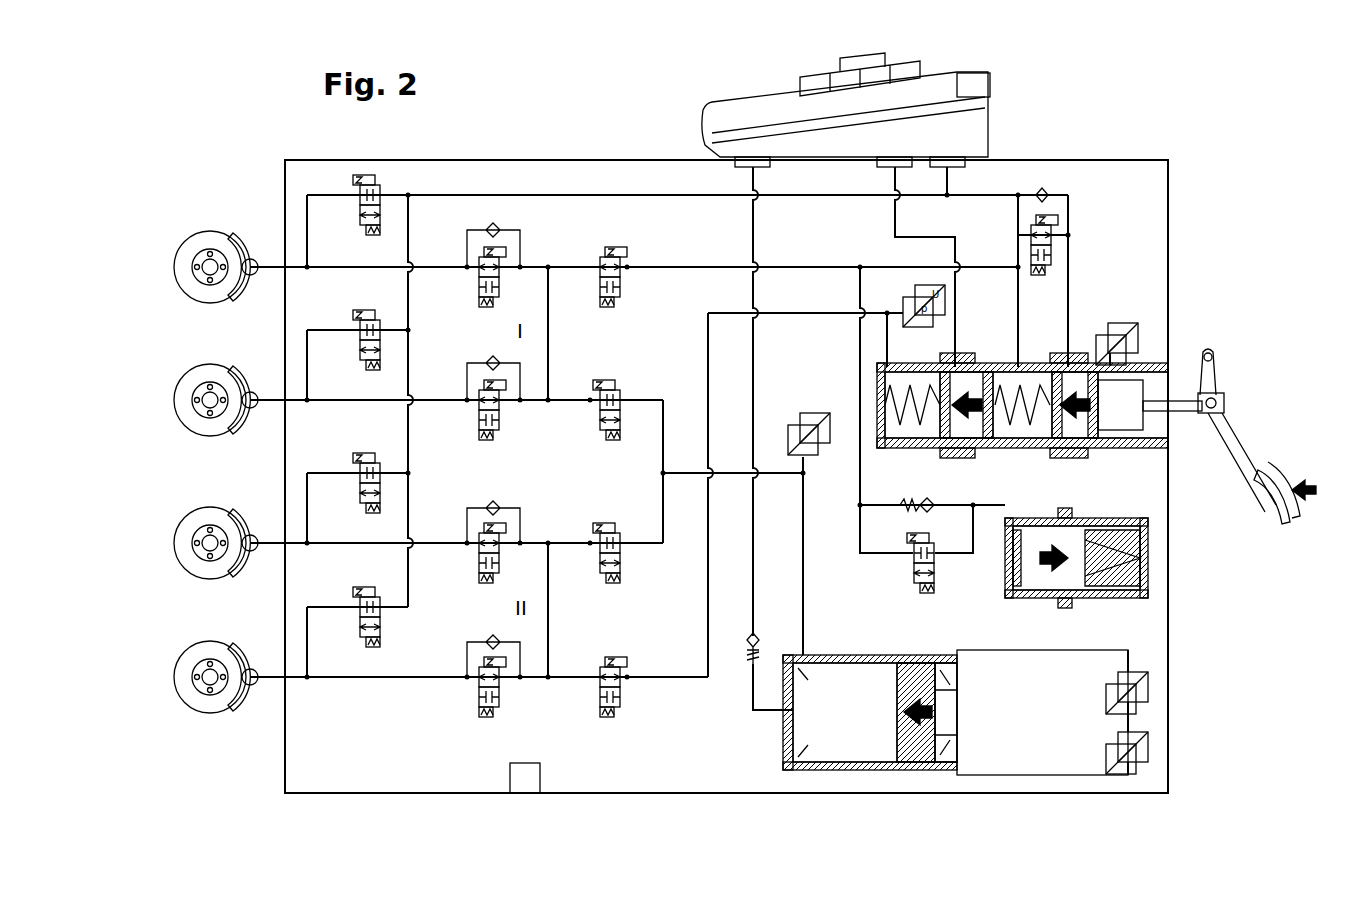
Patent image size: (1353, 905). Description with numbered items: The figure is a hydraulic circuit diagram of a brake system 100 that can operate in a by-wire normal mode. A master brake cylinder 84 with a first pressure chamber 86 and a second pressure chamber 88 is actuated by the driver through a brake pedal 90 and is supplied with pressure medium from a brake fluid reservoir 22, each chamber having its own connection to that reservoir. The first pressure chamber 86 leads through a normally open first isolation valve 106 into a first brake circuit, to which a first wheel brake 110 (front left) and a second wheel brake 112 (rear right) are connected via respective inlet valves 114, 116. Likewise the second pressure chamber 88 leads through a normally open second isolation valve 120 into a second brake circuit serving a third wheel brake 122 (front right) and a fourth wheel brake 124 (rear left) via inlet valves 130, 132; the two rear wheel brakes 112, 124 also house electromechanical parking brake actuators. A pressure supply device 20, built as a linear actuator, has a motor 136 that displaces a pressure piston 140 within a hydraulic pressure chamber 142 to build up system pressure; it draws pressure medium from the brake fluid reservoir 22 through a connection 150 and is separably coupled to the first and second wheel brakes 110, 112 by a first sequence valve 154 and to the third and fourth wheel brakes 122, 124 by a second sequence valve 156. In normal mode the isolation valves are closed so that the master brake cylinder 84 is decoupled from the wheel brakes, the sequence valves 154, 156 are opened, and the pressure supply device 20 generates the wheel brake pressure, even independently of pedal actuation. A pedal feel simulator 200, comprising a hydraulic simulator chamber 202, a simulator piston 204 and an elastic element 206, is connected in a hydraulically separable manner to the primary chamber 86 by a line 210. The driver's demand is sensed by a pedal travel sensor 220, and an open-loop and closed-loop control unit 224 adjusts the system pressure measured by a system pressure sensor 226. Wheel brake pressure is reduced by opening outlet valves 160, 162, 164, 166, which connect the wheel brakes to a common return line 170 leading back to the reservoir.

The brake system 100 is at (1050, 130).
The brake fluid reservoir 22 is at (760, 106).
The common return line 170 is at (588, 193).
The first wheel brake 110 is at (235, 247).
The second wheel brake 112 is at (235, 380).
The third wheel brake 122 is at (235, 523).
The fourth wheel brake 124 is at (235, 657).
The outlet valve 160 is at (360, 208).
The outlet valve 162 is at (360, 343).
The outlet valve 164 is at (360, 486).
The outlet valve 166 is at (360, 620).
The inlet valve 114 is at (477, 275).
The inlet valve 116 is at (477, 408).
The inlet valve 130 is at (477, 551).
The inlet valve 132 is at (477, 685).
The first isolation valve 106 is at (600, 290).
The first sequence valve 154 is at (600, 420).
The second sequence valve 156 is at (600, 563).
The second isolation valve 120 is at (600, 698).
The line 210 is at (992, 265).
The system pressure sensor 226 is at (812, 412).
The pedal travel sensor 220 is at (1122, 322).
The master brake cylinder 84 is at (1039, 377).
The second pressure chamber 88 is at (918, 440).
The first pressure chamber 86 is at (1026, 440).
The brake pedal 90 is at (1246, 445).
The pedal feel simulator 200 is at (1128, 565).
The simulator piston 204 is at (1036, 590).
The elastic element 206 is at (1142, 575).
The hydraulic simulator chamber 202 is at (1000, 588).
The connection 150 is at (757, 605).
The pressure supply device 20 is at (1010, 730).
The hydraulic pressure chamber 142 is at (845, 740).
The pressure piston 140 is at (905, 765).
The motor 136 is at (1000, 740).
The open-loop and closed-loop control unit 224 is at (525, 780).